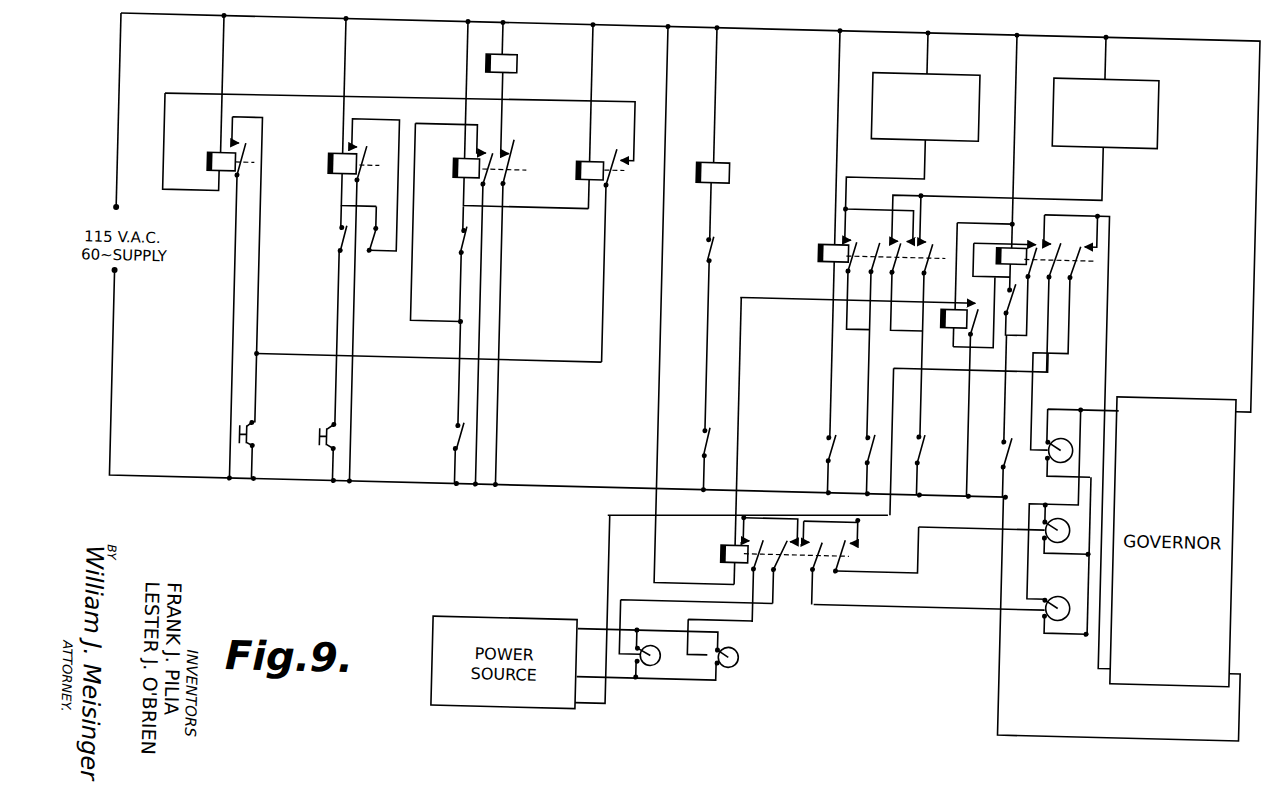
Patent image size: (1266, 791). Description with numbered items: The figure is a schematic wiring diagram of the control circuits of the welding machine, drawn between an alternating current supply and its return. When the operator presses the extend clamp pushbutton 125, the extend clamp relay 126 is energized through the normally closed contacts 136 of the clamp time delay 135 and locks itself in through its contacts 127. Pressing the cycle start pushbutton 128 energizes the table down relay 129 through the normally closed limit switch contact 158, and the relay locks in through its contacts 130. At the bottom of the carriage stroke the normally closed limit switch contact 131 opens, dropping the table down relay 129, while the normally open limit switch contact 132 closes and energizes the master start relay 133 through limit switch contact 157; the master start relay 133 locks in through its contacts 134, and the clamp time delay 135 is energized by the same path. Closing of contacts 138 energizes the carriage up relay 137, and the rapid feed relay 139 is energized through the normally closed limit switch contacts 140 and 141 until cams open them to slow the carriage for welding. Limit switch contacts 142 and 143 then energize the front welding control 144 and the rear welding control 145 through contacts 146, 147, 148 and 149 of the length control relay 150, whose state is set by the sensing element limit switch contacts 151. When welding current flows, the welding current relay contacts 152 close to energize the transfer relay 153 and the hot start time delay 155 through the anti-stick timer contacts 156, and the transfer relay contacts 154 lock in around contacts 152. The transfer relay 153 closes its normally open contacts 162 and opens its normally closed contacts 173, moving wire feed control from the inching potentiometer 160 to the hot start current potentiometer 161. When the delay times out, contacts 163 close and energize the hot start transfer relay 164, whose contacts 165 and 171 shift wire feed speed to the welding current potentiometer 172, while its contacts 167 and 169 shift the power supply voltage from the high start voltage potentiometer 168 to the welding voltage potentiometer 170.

The extend clamp pushbutton 125 is at (266, 416).
The extend clamp relay 126 is at (201, 102).
The extend clamp relay contacts 127 is at (264, 298).
The cycle start pushbutton 128 is at (307, 451).
The table down relay 129 is at (336, 111).
The table down relay contacts 130 is at (367, 300).
The normally closed limit switch contact 131 is at (380, 247).
The normally open limit switch contact 132 is at (437, 452).
The master start relay 133 is at (501, 173).
The master start relay contacts 134 is at (478, 293).
The clamp time delay 135 is at (573, 116).
The normally closed contacts 136 is at (609, 238).
The carriage up relay 137 is at (525, 88).
The master start relay contacts 138 is at (510, 296).
The rapid feed relay 139 is at (741, 134).
The limit switch contact 140 is at (675, 458).
The limit switch contact 141 is at (683, 332).
The limit switch contact 142 is at (853, 444).
The limit switch contact 143 is at (936, 445).
The front welding control 144 is at (926, 87).
The rear welding control 145 is at (1106, 92).
The length control relay contact 146 is at (864, 268).
The length control relay contact 147 is at (889, 341).
The length control relay contact 148 is at (906, 287).
The length control relay contact 149 is at (938, 319).
The length control relay 150 is at (813, 233).
The limit switch contacts 151 is at (808, 463).
The welding current relay contacts 152 is at (989, 305).
The transfer relay 153 is at (997, 191).
The transfer relay contacts 154 is at (1037, 225).
The hot start time delay 155 is at (945, 291).
The anti-stick time delay timer contacts 156 is at (992, 415).
The limit switch contact 157 is at (440, 325).
The normally closed limit switch contact 158 is at (315, 314).
The inching potentiometer 160 is at (1073, 489).
The hot start current potentiometer 161 is at (1005, 515).
The normally open contacts 162 is at (1077, 440).
The hot start time delay contacts 163 is at (985, 403).
The hot start transfer relay 164 is at (711, 440).
The hot start transfer relay contacts 165 is at (867, 557).
The hot start transfer relay contacts 167 is at (795, 584).
The high start voltage potentiometer 168 is at (661, 678).
The hot start transfer relay contacts 169 is at (773, 558).
The welding voltage potentiometer 170 is at (755, 657).
The hot start transfer relay contacts 171 is at (847, 574).
The welding current potentiometer 172 is at (951, 596).
The normally closed contacts 173 is at (1071, 349).